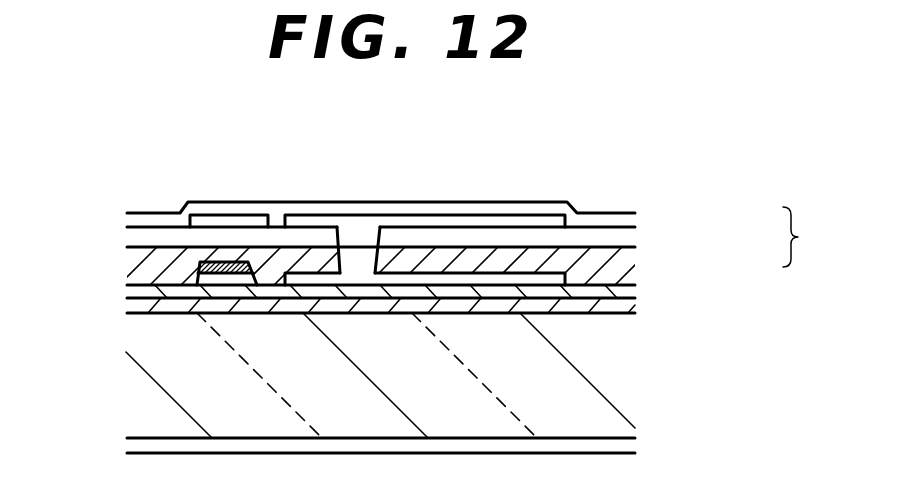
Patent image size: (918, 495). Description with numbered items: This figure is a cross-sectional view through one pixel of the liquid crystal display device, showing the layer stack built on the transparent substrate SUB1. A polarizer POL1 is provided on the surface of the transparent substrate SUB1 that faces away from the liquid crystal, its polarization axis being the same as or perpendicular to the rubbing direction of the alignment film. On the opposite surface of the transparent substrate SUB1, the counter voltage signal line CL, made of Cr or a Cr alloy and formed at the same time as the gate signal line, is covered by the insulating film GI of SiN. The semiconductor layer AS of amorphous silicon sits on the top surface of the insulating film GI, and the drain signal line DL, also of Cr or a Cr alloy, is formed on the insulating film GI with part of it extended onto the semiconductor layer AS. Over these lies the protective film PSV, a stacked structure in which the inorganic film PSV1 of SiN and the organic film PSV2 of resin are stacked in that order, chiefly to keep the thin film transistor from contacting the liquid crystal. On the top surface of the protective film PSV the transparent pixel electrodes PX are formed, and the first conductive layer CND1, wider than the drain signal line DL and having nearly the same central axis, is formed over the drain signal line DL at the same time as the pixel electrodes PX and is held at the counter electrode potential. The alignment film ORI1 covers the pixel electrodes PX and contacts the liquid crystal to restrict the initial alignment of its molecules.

The alignment film ORI1 is at (548, 203).
The first conductive layer CND1 is at (229, 222).
The pixel electrode PX is at (467, 222).
The organic film PSV2 is at (627, 237).
The inorganic film PSV1 is at (618, 270).
The protective film PSV is at (823, 237).
The semiconductor layer AS is at (207, 272).
The drain signal line DL is at (200, 283).
The insulating film GI is at (632, 293).
The counter voltage signal line CL is at (630, 305).
The transparent substrate SUB1 is at (600, 353).
The polarizer POL1 is at (133, 447).